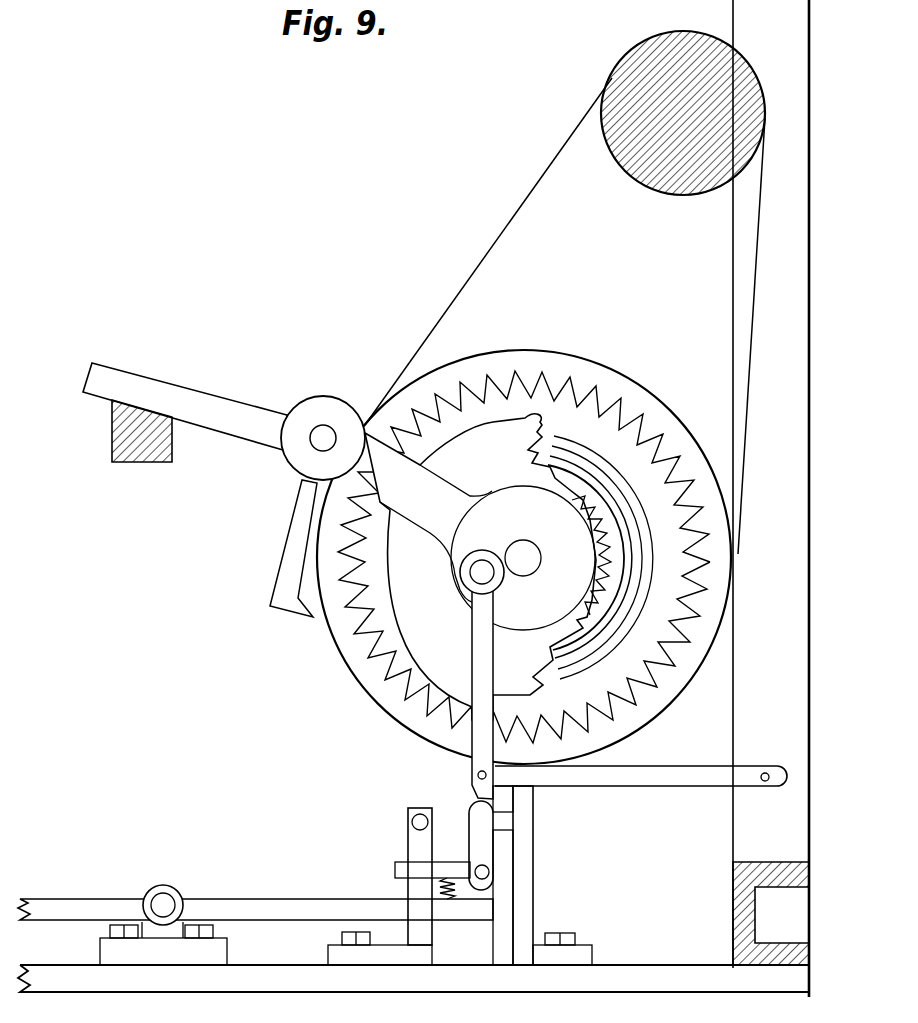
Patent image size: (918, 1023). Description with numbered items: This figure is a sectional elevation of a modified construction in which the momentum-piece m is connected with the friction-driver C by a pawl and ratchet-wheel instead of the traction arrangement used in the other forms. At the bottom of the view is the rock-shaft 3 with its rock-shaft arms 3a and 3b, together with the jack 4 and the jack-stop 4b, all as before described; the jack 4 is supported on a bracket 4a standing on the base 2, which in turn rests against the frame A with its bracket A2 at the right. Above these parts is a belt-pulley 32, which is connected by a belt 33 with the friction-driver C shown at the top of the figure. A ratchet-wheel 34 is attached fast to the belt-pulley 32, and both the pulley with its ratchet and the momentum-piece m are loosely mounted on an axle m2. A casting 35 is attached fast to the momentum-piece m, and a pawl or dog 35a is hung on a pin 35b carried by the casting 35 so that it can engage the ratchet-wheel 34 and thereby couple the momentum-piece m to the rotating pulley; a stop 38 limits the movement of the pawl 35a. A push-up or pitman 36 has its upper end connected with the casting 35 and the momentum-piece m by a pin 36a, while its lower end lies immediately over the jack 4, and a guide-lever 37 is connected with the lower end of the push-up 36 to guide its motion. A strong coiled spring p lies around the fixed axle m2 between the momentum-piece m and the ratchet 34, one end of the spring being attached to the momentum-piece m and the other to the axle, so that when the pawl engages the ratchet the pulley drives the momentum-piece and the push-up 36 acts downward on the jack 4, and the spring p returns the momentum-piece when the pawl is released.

The base 2 is at (413, 978).
The rock-shaft 3 is at (160, 903).
The rock-shaft arm 3a is at (65, 908).
The rock-shaft arm 3b is at (264, 908).
The jack 4 is at (454, 875).
The bracket 4a is at (523, 863).
The jack-stop 4b is at (412, 823).
The belt-pulley 32 is at (524, 557).
The belt 33 is at (521, 204).
The ratchet-wheel 34 is at (524, 557).
The casting 35 is at (347, 548).
The pawl or dog 35a is at (185, 406).
The pin 35b is at (324, 438).
The push-up or pitman 36 is at (488, 656).
The pin 36a is at (486, 575).
The guide-lever 37 is at (618, 788).
The stop 38 is at (166, 462).
The frame A is at (771, 498).
The frame bracket A2 is at (732, 908).
The friction-driver C is at (668, 190).
The momentum-piece m is at (488, 567).
The cam shaft m2 is at (541, 553).
The coiled spring p is at (628, 543).